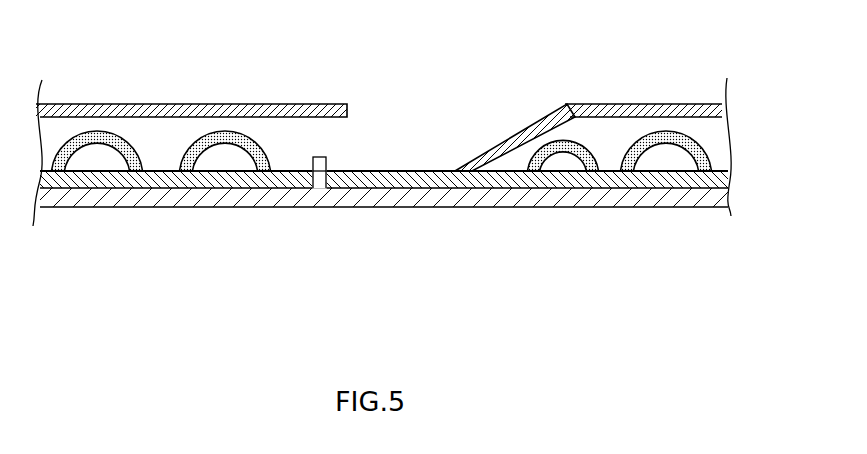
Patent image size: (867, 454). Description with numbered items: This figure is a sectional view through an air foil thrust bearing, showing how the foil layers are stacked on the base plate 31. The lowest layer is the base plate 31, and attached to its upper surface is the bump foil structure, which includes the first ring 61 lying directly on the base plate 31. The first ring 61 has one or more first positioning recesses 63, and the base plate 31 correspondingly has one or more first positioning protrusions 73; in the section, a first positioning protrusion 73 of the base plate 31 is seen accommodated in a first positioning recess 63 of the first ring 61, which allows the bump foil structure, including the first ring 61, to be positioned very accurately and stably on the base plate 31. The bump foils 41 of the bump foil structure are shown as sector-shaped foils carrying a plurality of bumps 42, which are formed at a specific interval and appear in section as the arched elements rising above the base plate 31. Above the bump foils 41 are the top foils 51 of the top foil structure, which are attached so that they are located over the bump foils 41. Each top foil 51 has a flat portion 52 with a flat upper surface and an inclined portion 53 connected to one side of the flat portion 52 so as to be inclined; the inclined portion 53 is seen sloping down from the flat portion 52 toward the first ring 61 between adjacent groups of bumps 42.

The base plate 31 is at (450, 196).
The bump foil 41 is at (417, 104).
The bump 42 is at (97, 131).
The top foil 51 is at (379, 91).
The flat portion 52 is at (312, 113).
The inclined portion 53 is at (508, 145).
The first ring 61 is at (418, 178).
The first positioning recess 63 is at (318, 190).
The first positioning protrusion 73 is at (327, 157).